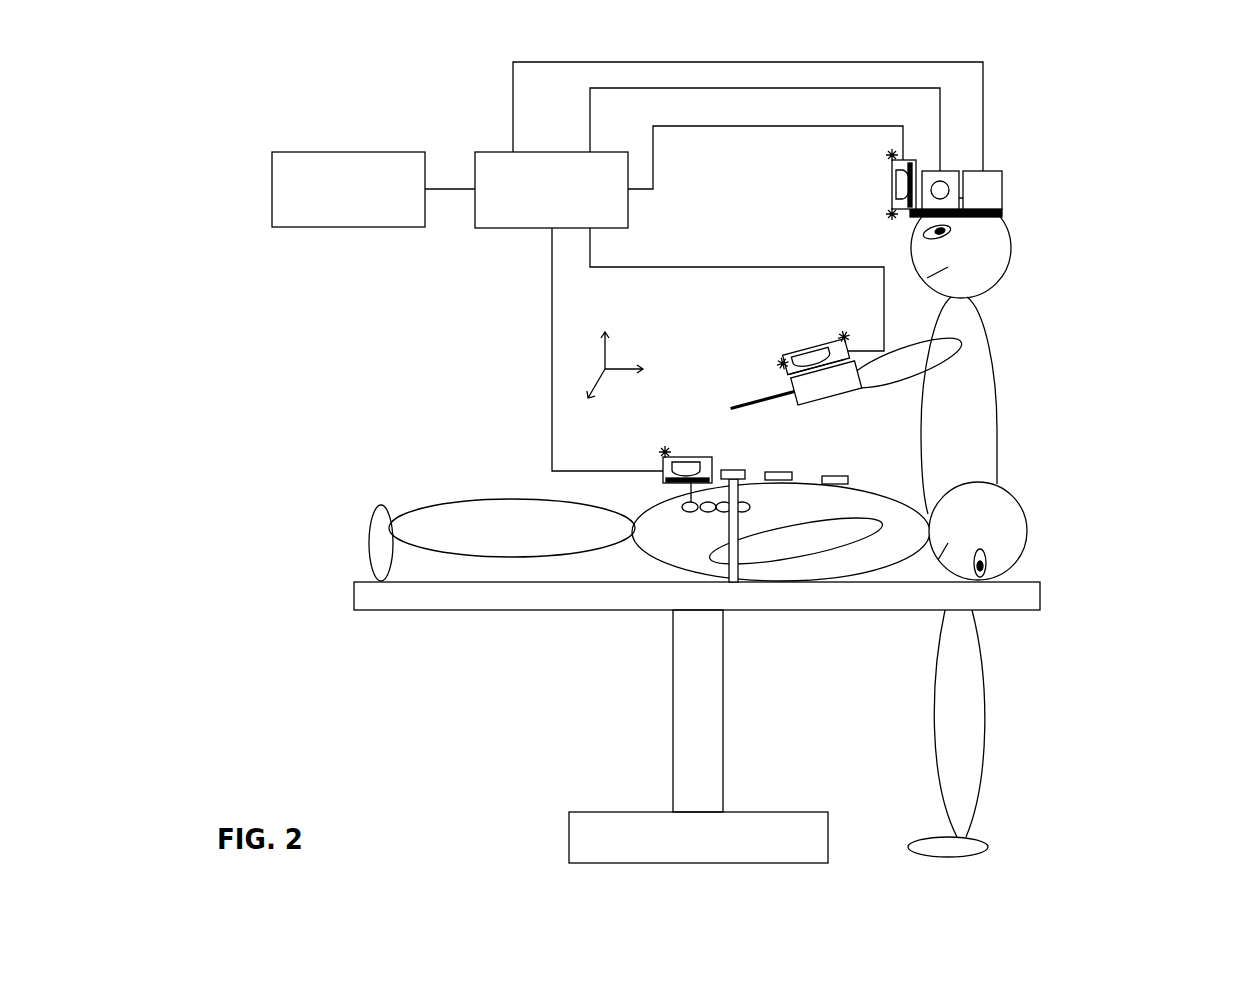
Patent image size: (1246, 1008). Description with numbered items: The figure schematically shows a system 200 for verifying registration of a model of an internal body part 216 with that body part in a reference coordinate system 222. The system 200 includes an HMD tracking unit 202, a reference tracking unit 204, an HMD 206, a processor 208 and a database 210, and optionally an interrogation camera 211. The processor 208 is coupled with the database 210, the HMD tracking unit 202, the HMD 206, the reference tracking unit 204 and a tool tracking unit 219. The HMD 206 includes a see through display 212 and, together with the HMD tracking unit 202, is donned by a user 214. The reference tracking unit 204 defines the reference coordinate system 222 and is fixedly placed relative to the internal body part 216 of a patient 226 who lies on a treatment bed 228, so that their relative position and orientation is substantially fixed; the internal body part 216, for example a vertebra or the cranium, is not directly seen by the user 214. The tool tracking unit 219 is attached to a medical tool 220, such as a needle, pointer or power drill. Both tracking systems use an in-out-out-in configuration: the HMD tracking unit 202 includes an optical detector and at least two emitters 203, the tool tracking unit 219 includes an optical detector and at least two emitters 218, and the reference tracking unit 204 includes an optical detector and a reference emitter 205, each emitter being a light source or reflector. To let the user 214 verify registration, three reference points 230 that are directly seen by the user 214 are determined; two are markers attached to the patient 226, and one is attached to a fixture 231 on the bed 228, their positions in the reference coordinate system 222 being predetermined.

The system 200 is at (1137, 349).
The HMD tracking unit 202 is at (910, 160).
The emitters 203 is at (855, 174).
The reference tracking unit 204 is at (660, 480).
The emitter 205 is at (666, 450).
The HMD 206 is at (990, 170).
The processor 208 is at (615, 228).
The database 210 is at (398, 228).
The interrogation camera 211 is at (943, 171).
The see through display 212 is at (897, 230).
The user 214 is at (998, 425).
The internal body part 216 is at (718, 517).
The emitters 218 is at (861, 210).
The tool tracking unit 219 is at (790, 368).
The medical tool 220 is at (839, 243).
The reference coordinate system 222 is at (608, 357).
The patient 226 is at (1030, 525).
The treatment bed 228 is at (450, 612).
The reference points 230 is at (818, 455).
The fixture 231 is at (742, 527).